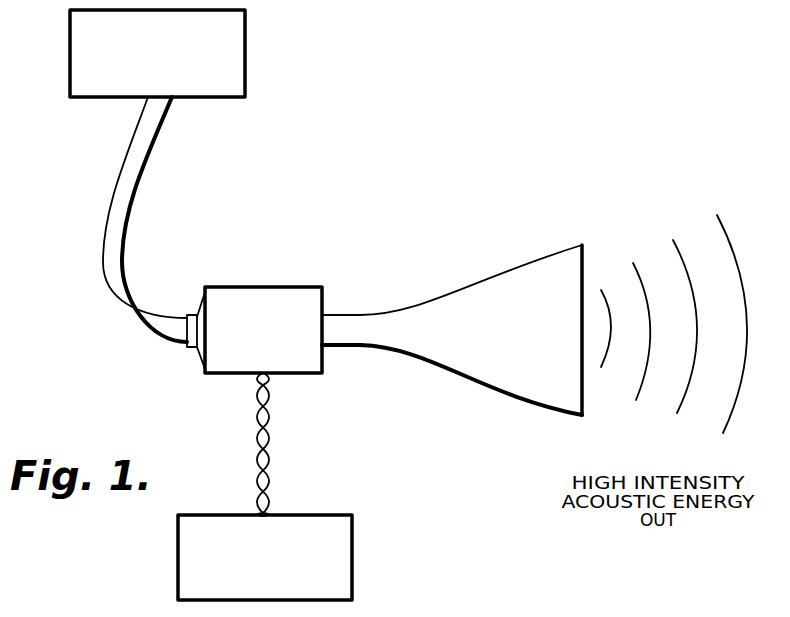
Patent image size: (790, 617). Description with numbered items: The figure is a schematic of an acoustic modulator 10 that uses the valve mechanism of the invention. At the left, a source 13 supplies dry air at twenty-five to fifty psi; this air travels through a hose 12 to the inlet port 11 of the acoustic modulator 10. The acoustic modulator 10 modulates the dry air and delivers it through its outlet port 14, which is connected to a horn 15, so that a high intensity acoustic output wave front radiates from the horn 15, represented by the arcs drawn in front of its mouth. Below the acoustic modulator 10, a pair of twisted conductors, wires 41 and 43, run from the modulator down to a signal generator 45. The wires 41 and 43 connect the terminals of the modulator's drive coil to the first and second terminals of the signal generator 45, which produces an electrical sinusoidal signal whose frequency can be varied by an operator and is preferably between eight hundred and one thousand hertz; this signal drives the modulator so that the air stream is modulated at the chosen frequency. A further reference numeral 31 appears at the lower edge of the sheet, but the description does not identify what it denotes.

The acoustic modulator 10 is at (243, 287).
The inlet port 11 is at (187, 343).
The hose 12 is at (138, 185).
The source 13 is at (245, 40).
The outlet port 14 is at (323, 309).
The horn 15 is at (519, 272).
The element 31 is at (447, 616).
The wire 41 is at (268, 421).
The wire 43 is at (268, 420).
The signal generator 45 is at (352, 556).